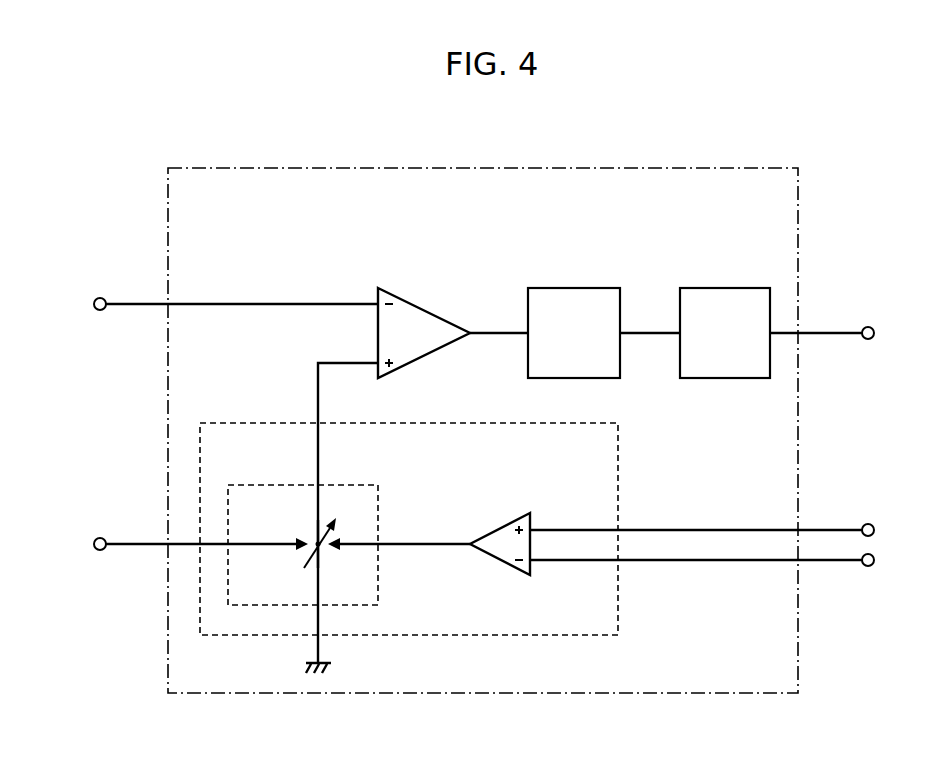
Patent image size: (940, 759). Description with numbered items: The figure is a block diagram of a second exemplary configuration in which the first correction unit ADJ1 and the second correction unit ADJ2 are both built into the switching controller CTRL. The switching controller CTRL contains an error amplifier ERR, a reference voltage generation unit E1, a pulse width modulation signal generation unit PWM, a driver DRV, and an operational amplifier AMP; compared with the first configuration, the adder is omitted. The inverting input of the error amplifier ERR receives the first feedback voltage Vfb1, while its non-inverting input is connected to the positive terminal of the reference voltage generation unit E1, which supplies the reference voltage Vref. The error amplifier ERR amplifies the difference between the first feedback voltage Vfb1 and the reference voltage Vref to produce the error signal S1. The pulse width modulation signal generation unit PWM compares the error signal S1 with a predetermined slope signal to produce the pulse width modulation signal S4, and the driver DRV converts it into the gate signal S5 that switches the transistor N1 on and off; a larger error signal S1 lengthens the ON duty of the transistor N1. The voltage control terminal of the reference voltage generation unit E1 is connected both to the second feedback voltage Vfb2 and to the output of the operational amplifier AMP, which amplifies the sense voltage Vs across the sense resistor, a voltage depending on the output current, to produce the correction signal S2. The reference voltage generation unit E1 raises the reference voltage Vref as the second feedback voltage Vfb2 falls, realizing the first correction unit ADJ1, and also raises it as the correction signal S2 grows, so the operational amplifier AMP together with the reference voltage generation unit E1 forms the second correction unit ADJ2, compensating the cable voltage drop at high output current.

The switching controller CTRL is at (501, 168).
The first feedback voltage Vfb1 is at (205, 306).
The second feedback voltage Vfb2 is at (169, 546).
The reference voltage Vref is at (335, 498).
The error amplifier ERR is at (422, 308).
The error signal S1 is at (499, 318).
The pulse width modulation signal generation unit PWM is at (574, 333).
The pulse width modulation signal S4 is at (650, 317).
The driver DRV is at (725, 333).
The gate signal S5 is at (816, 317).
The transistor N1 is at (889, 334).
The first correction unit ADJ1 is at (272, 482).
The second correction unit ADJ2 is at (468, 422).
The reference voltage generation unit E1 is at (322, 550).
The correction signal S2 is at (399, 558).
The operational amplifier AMP is at (496, 527).
The voltage across the sense resistor Vs is at (721, 545).